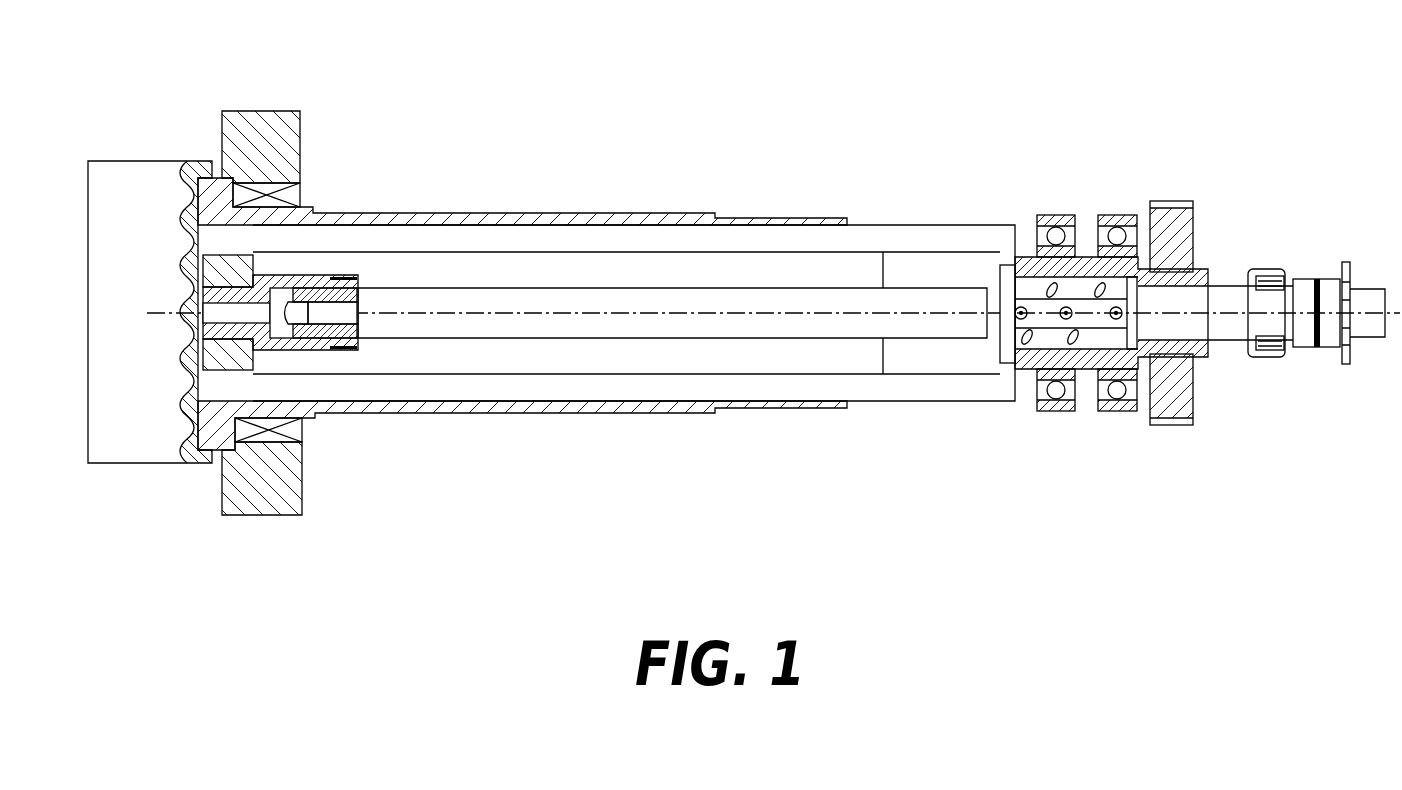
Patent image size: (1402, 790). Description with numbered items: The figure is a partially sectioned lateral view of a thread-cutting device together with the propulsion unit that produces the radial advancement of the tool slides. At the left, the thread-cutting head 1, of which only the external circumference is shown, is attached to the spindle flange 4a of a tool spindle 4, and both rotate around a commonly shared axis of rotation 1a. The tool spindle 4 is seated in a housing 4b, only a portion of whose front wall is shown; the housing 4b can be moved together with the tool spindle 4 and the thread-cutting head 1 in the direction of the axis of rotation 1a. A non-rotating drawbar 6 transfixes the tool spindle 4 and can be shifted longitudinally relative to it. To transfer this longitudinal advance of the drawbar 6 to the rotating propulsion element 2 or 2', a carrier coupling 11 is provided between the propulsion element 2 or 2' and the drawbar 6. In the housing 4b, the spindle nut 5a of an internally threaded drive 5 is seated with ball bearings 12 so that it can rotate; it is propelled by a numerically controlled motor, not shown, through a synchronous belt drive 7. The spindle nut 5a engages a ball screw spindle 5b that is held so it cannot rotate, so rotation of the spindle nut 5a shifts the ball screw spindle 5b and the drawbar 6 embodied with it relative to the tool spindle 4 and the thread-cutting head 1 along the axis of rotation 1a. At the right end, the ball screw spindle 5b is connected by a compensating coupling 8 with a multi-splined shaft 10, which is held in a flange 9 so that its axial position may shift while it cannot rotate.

The thread-cutting head 1 is at (148, 161).
The axis of rotation 1a is at (748, 313).
The propulsion element 2 is at (270, 402).
The propulsion element 2' is at (280, 312).
The tool spindle 4 is at (430, 213).
The spindle flange 4a is at (214, 177).
The housing 4b is at (302, 481).
The internally threaded drive 5 is at (1066, 190).
The spindle nut 5a is at (1090, 257).
The ball screw spindle 5b is at (1223, 286).
The drawbar 6 is at (600, 288).
The synchronous belt drive 7 is at (1172, 201).
The compensating coupling 8 is at (1252, 272).
The flange 9 is at (1346, 262).
The multi-splined shaft 10 is at (1373, 340).
The carrier coupling 11 is at (300, 276).
The ball bearings 12 is at (1052, 412).